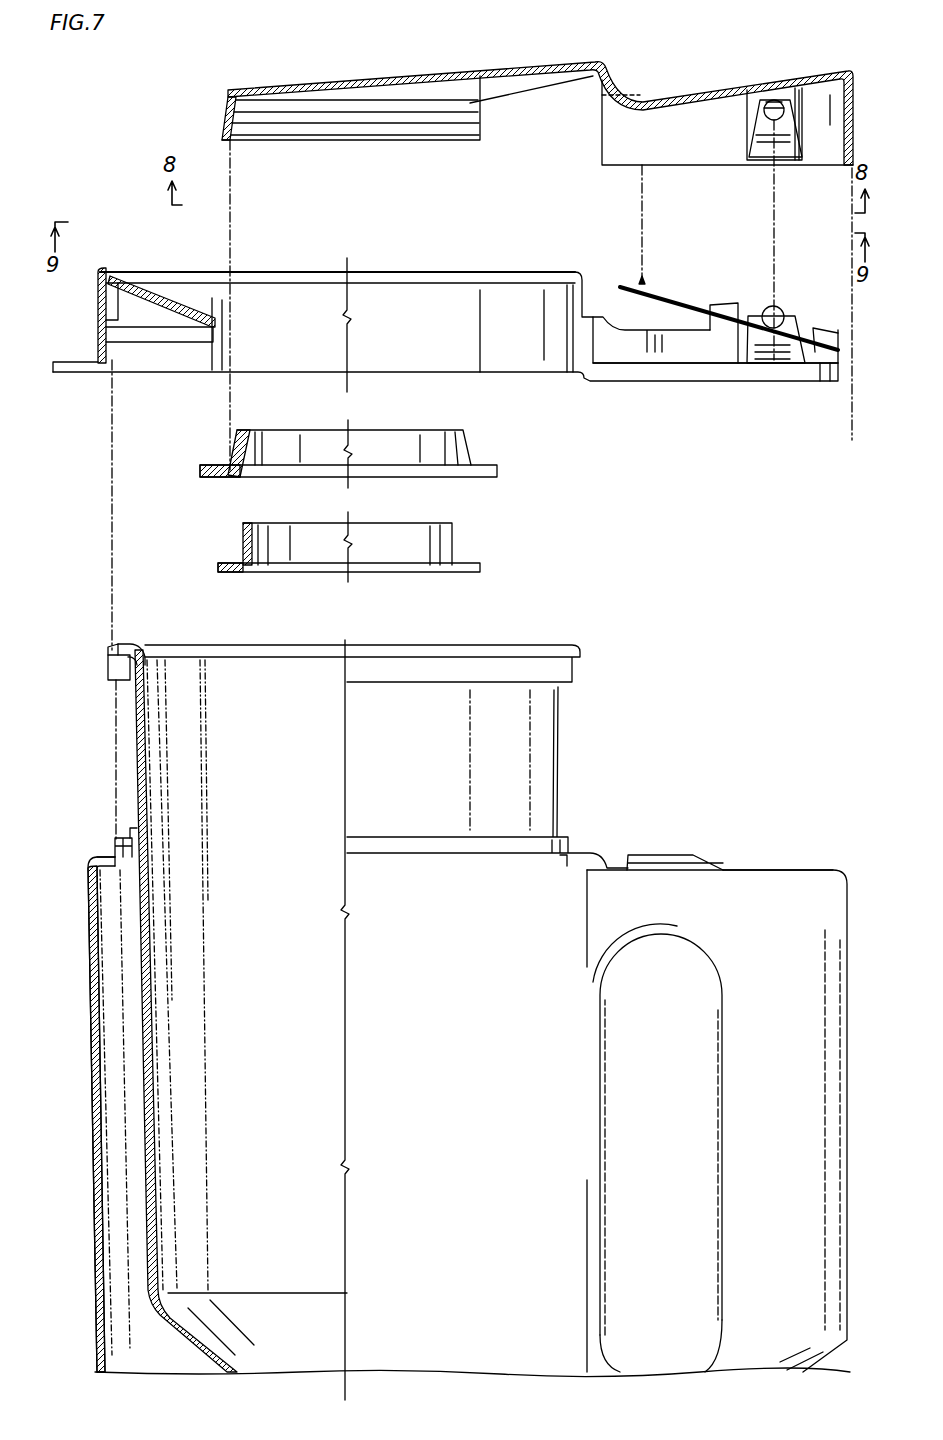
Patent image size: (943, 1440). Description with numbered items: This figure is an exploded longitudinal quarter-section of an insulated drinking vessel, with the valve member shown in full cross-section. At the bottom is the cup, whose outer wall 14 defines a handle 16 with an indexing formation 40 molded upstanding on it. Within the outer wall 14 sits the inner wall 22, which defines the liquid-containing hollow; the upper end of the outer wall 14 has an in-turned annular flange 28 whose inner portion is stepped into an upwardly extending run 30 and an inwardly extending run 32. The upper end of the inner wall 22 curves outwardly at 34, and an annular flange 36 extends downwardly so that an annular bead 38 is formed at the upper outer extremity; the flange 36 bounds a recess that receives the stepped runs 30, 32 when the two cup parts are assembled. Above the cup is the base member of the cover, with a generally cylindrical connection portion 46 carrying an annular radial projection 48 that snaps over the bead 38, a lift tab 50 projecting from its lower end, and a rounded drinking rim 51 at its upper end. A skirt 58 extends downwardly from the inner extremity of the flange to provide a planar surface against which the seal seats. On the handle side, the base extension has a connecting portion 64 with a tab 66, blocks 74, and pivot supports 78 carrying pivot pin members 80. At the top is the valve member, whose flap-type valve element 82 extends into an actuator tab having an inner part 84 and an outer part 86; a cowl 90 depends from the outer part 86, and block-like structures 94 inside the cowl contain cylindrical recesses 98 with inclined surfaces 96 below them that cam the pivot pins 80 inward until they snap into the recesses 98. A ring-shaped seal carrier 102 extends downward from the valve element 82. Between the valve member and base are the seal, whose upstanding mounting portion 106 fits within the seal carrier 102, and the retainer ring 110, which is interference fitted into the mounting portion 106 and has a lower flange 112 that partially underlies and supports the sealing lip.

The outer wall 14 is at (92, 958).
The handle 16 is at (717, 1121).
The inner wall 22 is at (148, 940).
The annular flange 28 is at (97, 855).
The upwardly extending run 30 is at (118, 838).
The inwardly extending run 32 is at (134, 830).
The outwardly curved upper end 34 is at (146, 648).
The annular flange 36 is at (108, 668).
The annular bead 38 is at (108, 650).
The indexing formation 40 is at (666, 855).
The connection portion 46 is at (412, 340).
The annular radial projection 48 is at (112, 346).
The lift tab 50 is at (72, 374).
The drinking rim 51 is at (430, 272).
The skirt 58 is at (226, 330).
The connecting portion 64 is at (822, 352).
The tab 66 is at (818, 330).
The inwardly projecting block 74 is at (718, 340).
The pivot support 78 is at (770, 367).
The pivot pin member 80 is at (776, 306).
The valve element 82 is at (378, 86).
The inner part of actuator tab 84 is at (535, 68).
The outer part of actuator tab 86 is at (785, 92).
The cowl 90 is at (697, 110).
The block-like structure 94 is at (805, 100).
The inclined surface 96 is at (770, 152).
The cylindrical recess 98 is at (760, 100).
The seal carrier 102 is at (223, 118).
The mounting portion 106 is at (252, 450).
The retainer ring 110 is at (455, 540).
The flange 112 is at (440, 574).